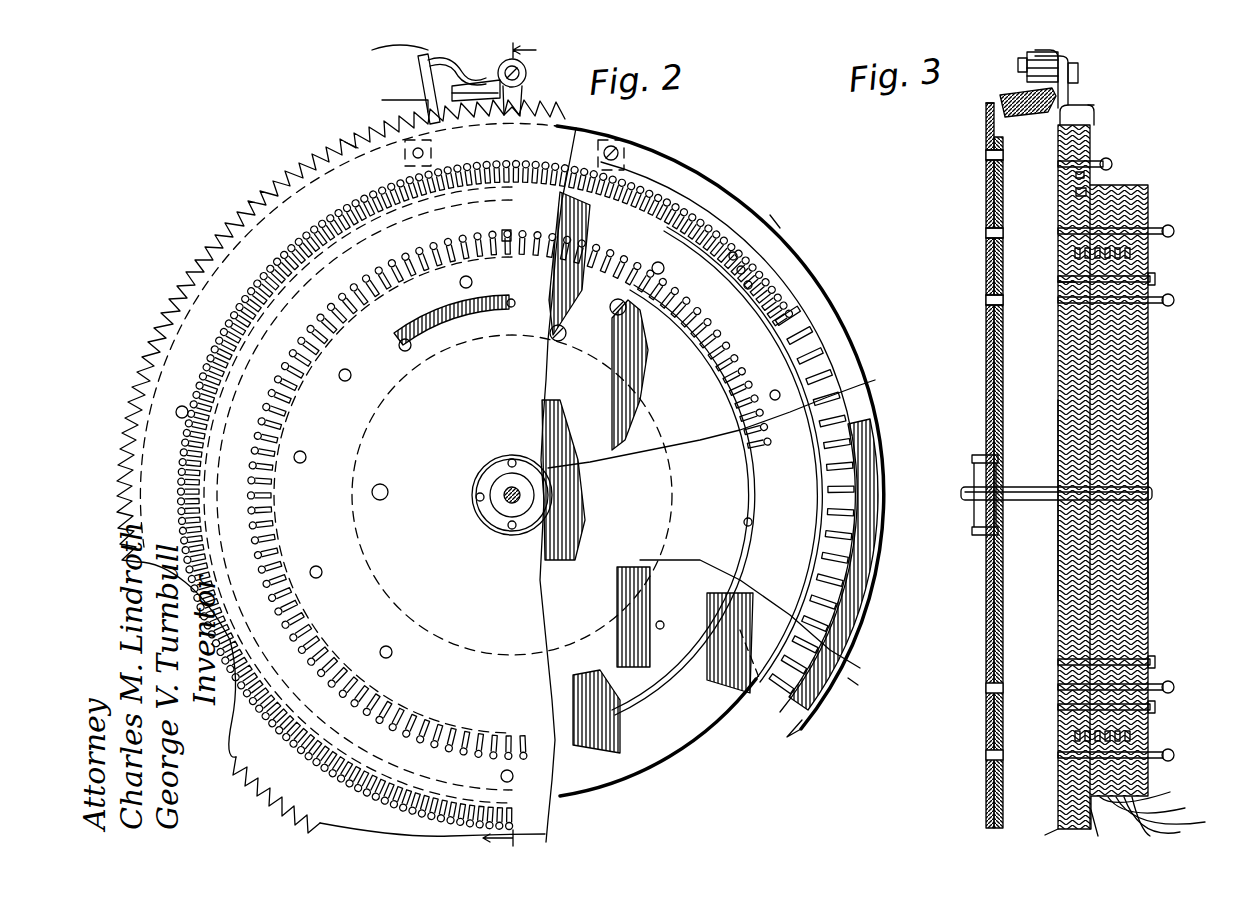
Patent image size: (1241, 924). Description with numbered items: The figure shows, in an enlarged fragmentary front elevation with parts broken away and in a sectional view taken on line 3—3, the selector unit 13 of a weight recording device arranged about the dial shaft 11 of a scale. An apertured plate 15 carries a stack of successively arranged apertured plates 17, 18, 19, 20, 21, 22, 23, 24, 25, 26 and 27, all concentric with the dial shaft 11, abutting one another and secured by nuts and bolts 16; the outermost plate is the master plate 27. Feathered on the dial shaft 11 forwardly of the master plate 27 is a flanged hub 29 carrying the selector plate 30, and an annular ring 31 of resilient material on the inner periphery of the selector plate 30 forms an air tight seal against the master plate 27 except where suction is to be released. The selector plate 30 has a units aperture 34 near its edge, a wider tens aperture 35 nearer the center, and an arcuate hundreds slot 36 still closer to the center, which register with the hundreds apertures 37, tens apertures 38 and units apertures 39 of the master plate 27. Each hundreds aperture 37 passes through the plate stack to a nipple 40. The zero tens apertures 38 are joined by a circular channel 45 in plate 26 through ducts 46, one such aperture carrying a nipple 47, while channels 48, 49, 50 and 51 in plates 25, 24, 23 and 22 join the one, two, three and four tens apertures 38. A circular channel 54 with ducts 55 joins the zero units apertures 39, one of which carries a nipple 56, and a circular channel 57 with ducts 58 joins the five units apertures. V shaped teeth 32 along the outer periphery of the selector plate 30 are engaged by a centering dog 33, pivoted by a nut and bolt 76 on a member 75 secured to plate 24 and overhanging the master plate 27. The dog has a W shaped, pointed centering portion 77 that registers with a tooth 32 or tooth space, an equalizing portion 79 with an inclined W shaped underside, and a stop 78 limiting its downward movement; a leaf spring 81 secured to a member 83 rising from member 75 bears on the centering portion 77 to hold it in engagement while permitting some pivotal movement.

In FIG. 2, the section line 3— 3 is at (501, 445).
In FIG. 2, the dial shaft 11 is at (505, 500).
In FIG. 3, the dial shaft 11 is at (1040, 502).
In FIG. 2, the selector unit 13 is at (862, 645).
In FIG. 3, the selector unit 13 is at (1150, 605).
In FIG. 3, the apertured plate 15 is at (1148, 455).
In FIG. 2, the nuts and bolts 16 is at (612, 313).
In FIG. 3, the nuts and bolts 16 is at (1156, 278).
In FIG. 3, the apertured plate 17 is at (1148, 789).
In FIG. 3, the apertured plate 18 is at (1159, 804).
In FIG. 3, the apertured plate 19 is at (1173, 815).
In FIG. 3, the apertured plate 20 is at (1164, 821).
In FIG. 3, the apertured plate 21 is at (1149, 824).
In FIG. 2, the apertured plate 22 is at (608, 792).
In FIG. 3, the apertured plate 22 is at (1107, 830).
In FIG. 2, the apertured plate 23 is at (715, 733).
In FIG. 3, the apertured plate 23 is at (1039, 839).
In FIG. 2, the apertured plate 24 is at (868, 683).
In FIG. 3, the apertured plate 24 is at (1096, 110).
In FIG. 2, the apertured plate 25 is at (885, 448).
In FIG. 3, the apertured plate 25 is at (1092, 112).
In FIG. 2, the apertured plate 26 is at (770, 215).
In FIG. 3, the apertured plate 26 is at (1075, 95).
In FIG. 2, the master plate 27 is at (712, 152).
In FIG. 3, the master plate 27 is at (1058, 450).
In FIG. 2, the flanged hub 29 is at (472, 497).
In FIG. 3, the flanged hub 29 is at (972, 470).
In FIG. 2, the selector plate 30 is at (275, 205).
In FIG. 3, the selector plate 30 is at (985, 365).
In FIG. 3, the annular ring 31 is at (1004, 322).
In FIG. 2, the V shaped teeth 32 is at (350, 125).
In FIG. 3, the V shaped teeth 32 is at (985, 106).
In FIG. 2, the centering dog 33 is at (480, 68).
In FIG. 3, the centering dog 33 is at (1020, 64).
In FIG. 2, the units aperture 34 is at (530, 170).
In FIG. 3, the units aperture 34 is at (985, 160).
In FIG. 2, the tens aperture 35 is at (515, 225).
In FIG. 3, the tens aperture 35 is at (985, 236).
In FIG. 2, the hundreds slot 36 is at (478, 300).
In FIG. 3, the hundreds slot 36 is at (985, 300).
In FIG. 2, the hundreds apertures 37 is at (510, 306).
In FIG. 2, the tens apertures 38 is at (512, 236).
In FIG. 3, the tens apertures 38 is at (1058, 230).
In FIG. 2, the units apertures 39 is at (505, 170).
In FIG. 3, the units apertures 39 is at (1058, 163).
In FIG. 3, the nipple 40 is at (1175, 280).
In FIG. 2, the circular channel 45 is at (705, 345).
In FIG. 3, the circular channel 45 is at (1058, 280).
In FIG. 2, the duct 46 is at (395, 335).
In FIG. 3, the duct 46 is at (1073, 252).
In FIG. 3, the nipple 47 is at (1166, 228).
In FIG. 2, the channel 48 is at (744, 522).
In FIG. 2, the channel 49 is at (715, 625).
In FIG. 2, the channel 50 is at (690, 675).
In FIG. 2, the channel 51 is at (596, 711).
In FIG. 2, the circular channel 54 is at (755, 312).
In FIG. 3, the circular channel 54 is at (1072, 192).
In FIG. 2, the ducts 55 is at (738, 250).
In FIG. 3, the ducts 55 is at (1072, 175).
In FIG. 3, the nipple 56 is at (1112, 160).
In FIG. 2, the circular channel 57 is at (835, 520).
In FIG. 2, the ducts 58 is at (830, 445).
In FIG. 2, the member 75 is at (527, 90).
In FIG. 2, the nut and bolt 76 is at (527, 70).
In FIG. 2, the centering portion 77 is at (420, 65).
In FIG. 2, the stop 78 is at (514, 150).
In FIG. 3, the stop 78 is at (1010, 110).
In FIG. 2, the equalizing portion 79 is at (530, 103).
In FIG. 2, the leaf spring 81 is at (389, 55).
In FIG. 2, the member 83 is at (391, 101).